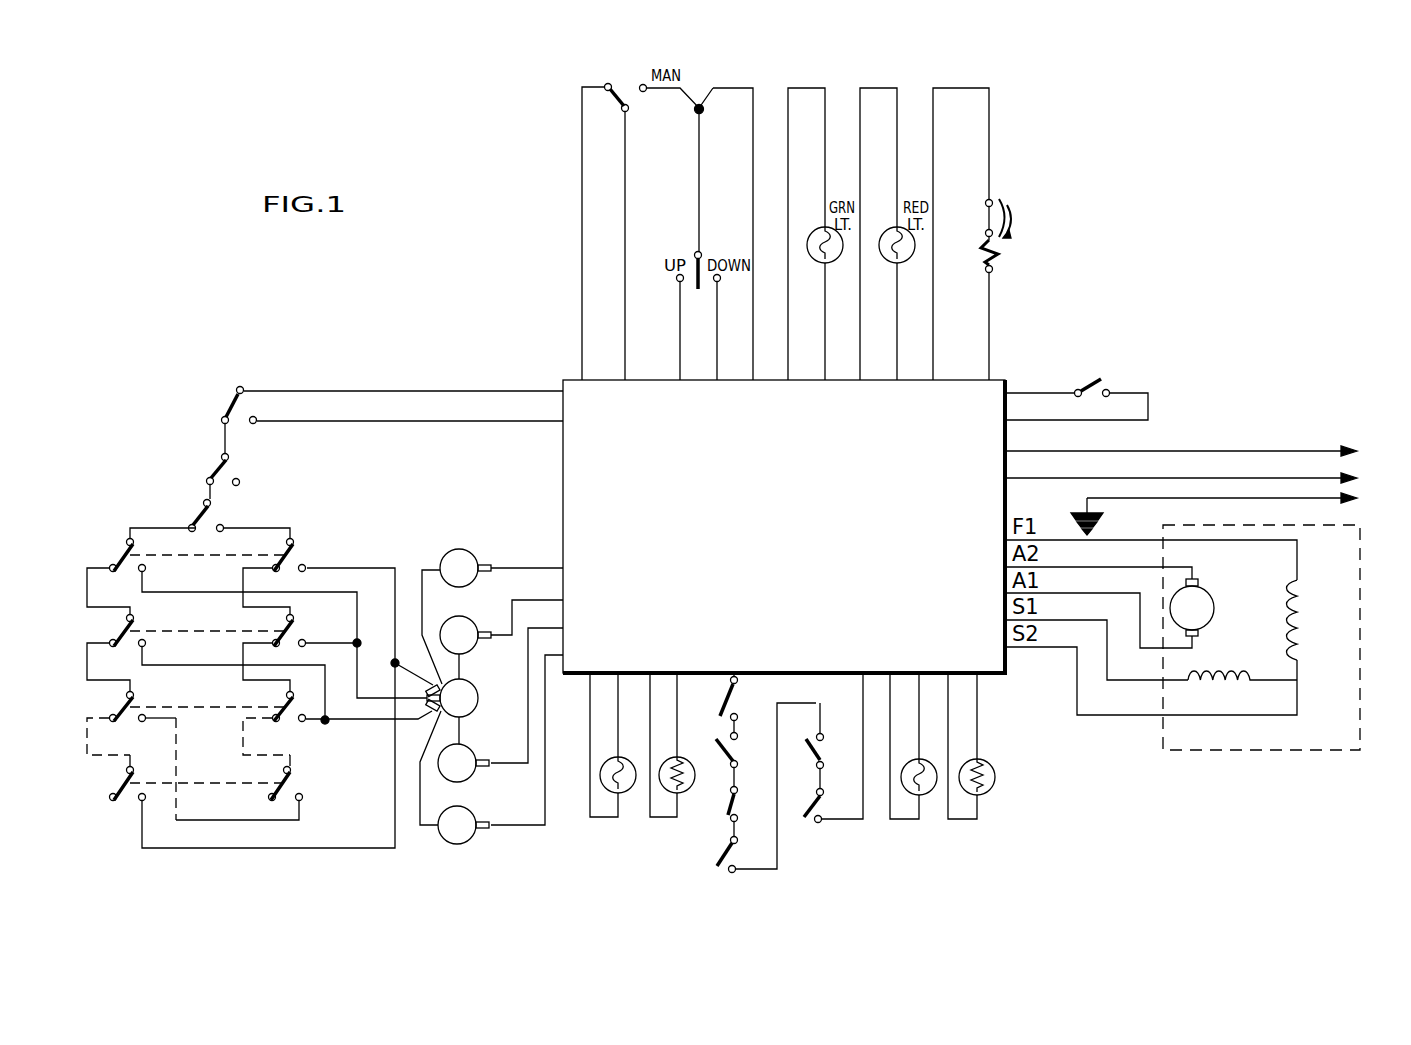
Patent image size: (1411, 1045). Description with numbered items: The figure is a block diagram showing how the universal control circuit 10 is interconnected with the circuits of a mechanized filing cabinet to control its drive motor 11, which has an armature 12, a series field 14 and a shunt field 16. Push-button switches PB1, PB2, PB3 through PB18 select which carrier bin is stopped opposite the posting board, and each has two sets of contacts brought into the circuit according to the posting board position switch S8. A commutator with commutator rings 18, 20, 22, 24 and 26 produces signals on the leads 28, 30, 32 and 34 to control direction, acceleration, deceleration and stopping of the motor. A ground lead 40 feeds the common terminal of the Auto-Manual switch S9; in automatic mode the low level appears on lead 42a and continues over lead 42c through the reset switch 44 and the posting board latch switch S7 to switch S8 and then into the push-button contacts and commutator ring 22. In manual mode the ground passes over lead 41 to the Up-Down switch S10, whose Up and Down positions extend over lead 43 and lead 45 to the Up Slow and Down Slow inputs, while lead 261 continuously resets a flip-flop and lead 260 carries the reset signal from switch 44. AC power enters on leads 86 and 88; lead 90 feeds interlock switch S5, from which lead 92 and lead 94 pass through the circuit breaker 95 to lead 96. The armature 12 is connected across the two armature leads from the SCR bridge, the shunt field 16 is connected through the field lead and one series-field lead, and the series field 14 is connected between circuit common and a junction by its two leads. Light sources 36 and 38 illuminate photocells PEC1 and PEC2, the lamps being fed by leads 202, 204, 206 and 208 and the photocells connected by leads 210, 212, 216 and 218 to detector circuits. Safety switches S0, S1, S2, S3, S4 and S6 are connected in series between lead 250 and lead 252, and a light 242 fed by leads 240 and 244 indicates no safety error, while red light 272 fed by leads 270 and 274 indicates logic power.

The universal control circuit 10 is at (795, 528).
The drive motor 11 is at (1223, 750).
The armature 12 is at (1208, 613).
The series field 14 is at (1238, 676).
The shunt field 16 is at (1304, 584).
The commutator ring 18 is at (470, 562).
The commutator ring 20 is at (466, 626).
The commutator ring 22 is at (470, 689).
The commutator ring 24 is at (469, 756).
The commutator ring 26 is at (464, 840).
The Up-Slow input lead 28 is at (540, 568).
The lead 30 is at (540, 600).
The lead 32 is at (527, 673).
The Down Slow input lead 34 is at (543, 776).
The light source 36 is at (930, 760).
The second light source 38 is at (626, 762).
The lead 40 is at (627, 198).
The lead 41 is at (702, 158).
The lead 42a is at (582, 198).
The lead 42c is at (466, 391).
The lead 43 is at (676, 323).
The reset switch 44 is at (230, 402).
The lead 45 is at (717, 338).
The AC lead 86 is at (1247, 450).
The AC lead 88 is at (1272, 478).
The lead 90 is at (1143, 423).
The lead 92 is at (1038, 392).
The lead 94 is at (990, 340).
The circuit breaker 95 is at (1001, 256).
The lead 96 is at (934, 340).
The lead 202 is at (863, 684).
The lead 204 is at (590, 760).
The lead 206 is at (918, 688).
The lead 208 is at (617, 707).
The lead 210 is at (653, 690).
The lead 212 is at (678, 715).
The lead 216 is at (950, 690).
The lead 218 is at (980, 724).
The lead 240 is at (828, 335).
The light 242 is at (813, 230).
The lead 244 is at (790, 305).
The lead 250 is at (859, 676).
The lead 252 is at (738, 678).
The lead 260 is at (452, 424).
The lead 261 is at (753, 88).
The lead 270 is at (862, 265).
The red light 272 is at (914, 252).
The lead 274 is at (898, 335).
The safety interlock switch S0 is at (738, 811).
The safety interlock switch S1 is at (826, 753).
The safety interlock switch S2 is at (718, 743).
The safety interlock switch S3 is at (718, 859).
The safety interlock switch S4 is at (826, 806).
The interlock switch S5 is at (1097, 384).
The safety interlock switch S6 is at (738, 687).
The posting board latch switch S7 is at (216, 470).
The posting board position switch S8 is at (200, 512).
The Auto-Manual switch S9 is at (621, 86).
The Up-Down switch S10 is at (702, 252).
The push-button switch PB1 is at (193, 577).
The push-button switch PB2 is at (193, 653).
The push-button switch PB3 is at (193, 756).
The push-button switch PB18 is at (188, 784).
The first photoelectric cell PEC1 is at (996, 780).
The second photoelectric cell PEC2 is at (682, 797).